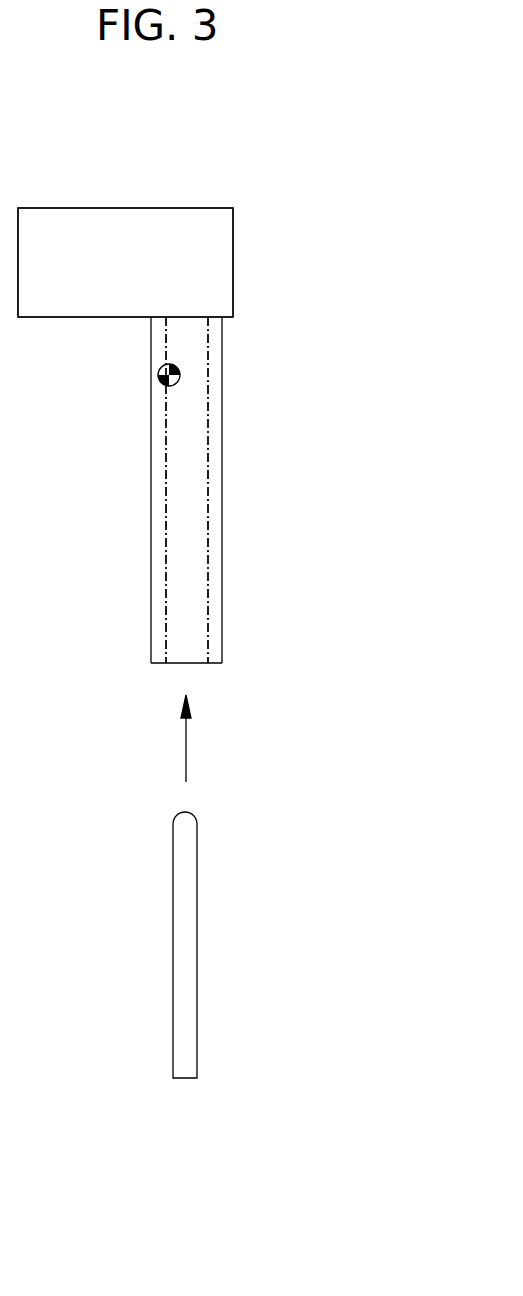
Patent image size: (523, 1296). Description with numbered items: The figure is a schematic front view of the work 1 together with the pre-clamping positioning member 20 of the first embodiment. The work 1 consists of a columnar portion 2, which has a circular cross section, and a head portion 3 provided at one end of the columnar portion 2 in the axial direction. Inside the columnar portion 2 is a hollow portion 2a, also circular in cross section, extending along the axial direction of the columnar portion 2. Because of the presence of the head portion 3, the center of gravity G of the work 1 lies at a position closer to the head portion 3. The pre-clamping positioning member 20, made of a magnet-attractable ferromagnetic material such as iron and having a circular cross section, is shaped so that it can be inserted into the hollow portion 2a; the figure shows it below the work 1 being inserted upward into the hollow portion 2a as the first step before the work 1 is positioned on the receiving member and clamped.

The work 1 is at (62, 200).
The head portion 3 is at (234, 272).
The columnar portion 2 is at (223, 530).
The hollow portion 2a is at (198, 464).
The center of gravity G is at (158, 370).
The pre-clamping positioning member 20 is at (198, 920).